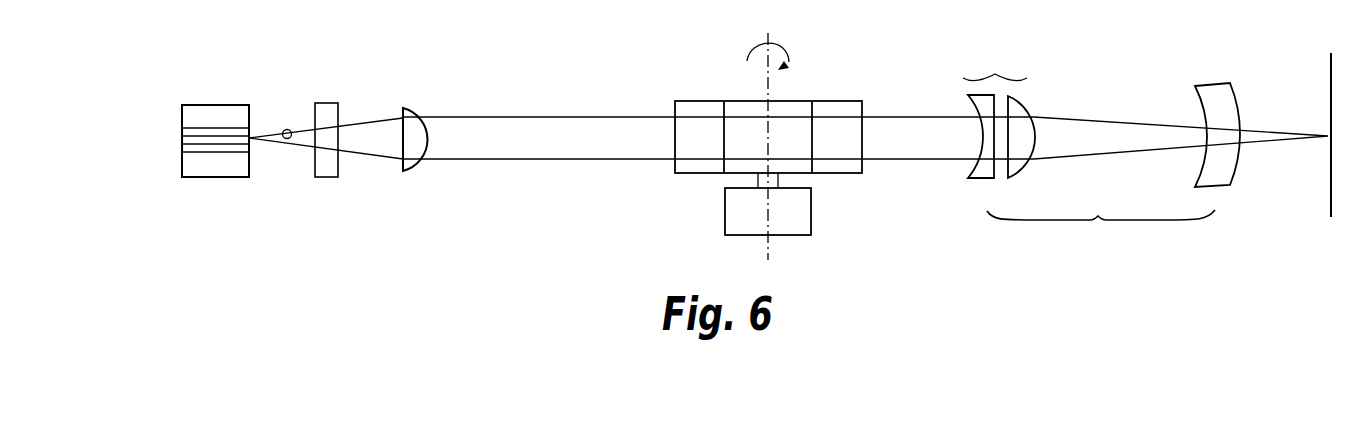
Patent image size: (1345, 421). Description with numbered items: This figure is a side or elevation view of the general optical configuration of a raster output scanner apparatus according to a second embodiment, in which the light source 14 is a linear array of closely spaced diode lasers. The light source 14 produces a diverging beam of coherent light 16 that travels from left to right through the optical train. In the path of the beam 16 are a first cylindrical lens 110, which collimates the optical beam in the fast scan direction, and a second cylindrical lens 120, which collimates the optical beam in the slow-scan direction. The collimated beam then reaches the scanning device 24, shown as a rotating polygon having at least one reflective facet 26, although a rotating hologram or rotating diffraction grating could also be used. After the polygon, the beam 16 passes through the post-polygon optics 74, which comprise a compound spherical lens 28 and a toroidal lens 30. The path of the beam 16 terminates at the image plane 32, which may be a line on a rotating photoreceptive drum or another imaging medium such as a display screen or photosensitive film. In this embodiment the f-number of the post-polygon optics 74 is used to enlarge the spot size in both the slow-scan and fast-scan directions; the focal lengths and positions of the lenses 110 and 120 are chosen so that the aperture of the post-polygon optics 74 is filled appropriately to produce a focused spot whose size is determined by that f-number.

The light source 14 is at (217, 105).
The beam of coherent light 16 is at (289, 130).
The first cylindrical lens 110 is at (338, 103).
The second cylindrical lens 120 is at (408, 108).
The scanning device 24 is at (692, 173).
The reflective facet 26 is at (797, 101).
The compound spherical lens 28 is at (995, 73).
The toroidal lens 30 is at (1217, 93).
The image plane 32 is at (1329, 186).
The post-polygon optics 74 is at (1101, 231).